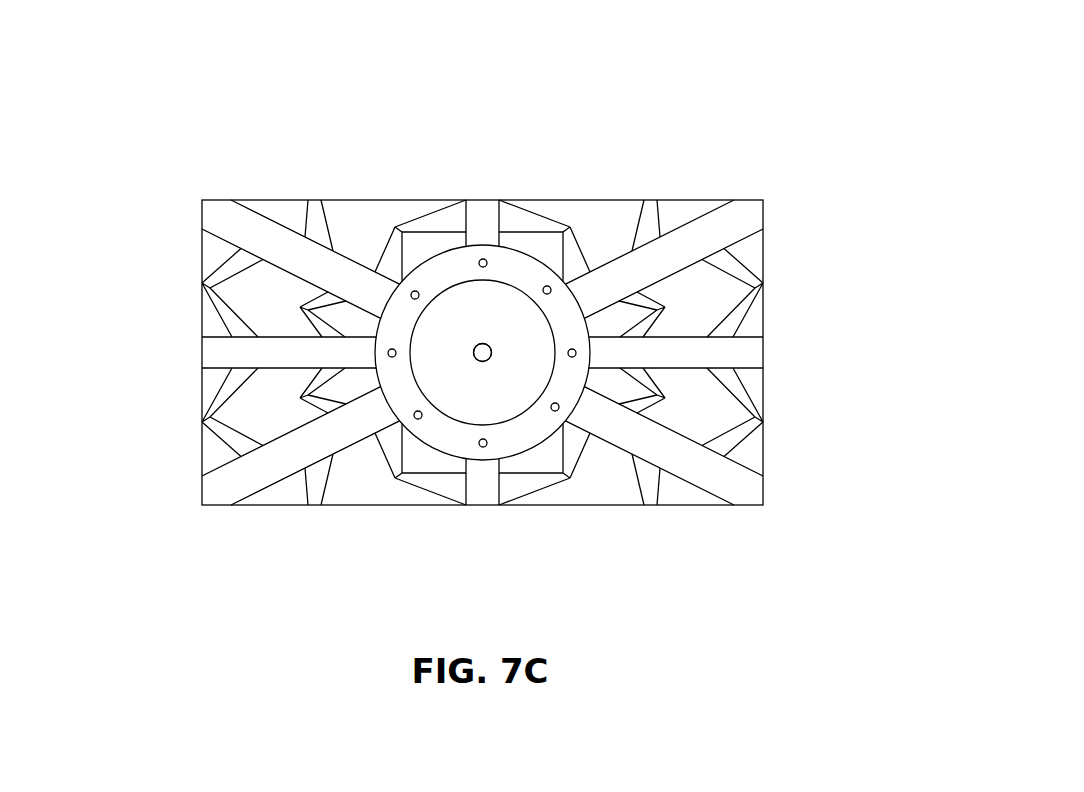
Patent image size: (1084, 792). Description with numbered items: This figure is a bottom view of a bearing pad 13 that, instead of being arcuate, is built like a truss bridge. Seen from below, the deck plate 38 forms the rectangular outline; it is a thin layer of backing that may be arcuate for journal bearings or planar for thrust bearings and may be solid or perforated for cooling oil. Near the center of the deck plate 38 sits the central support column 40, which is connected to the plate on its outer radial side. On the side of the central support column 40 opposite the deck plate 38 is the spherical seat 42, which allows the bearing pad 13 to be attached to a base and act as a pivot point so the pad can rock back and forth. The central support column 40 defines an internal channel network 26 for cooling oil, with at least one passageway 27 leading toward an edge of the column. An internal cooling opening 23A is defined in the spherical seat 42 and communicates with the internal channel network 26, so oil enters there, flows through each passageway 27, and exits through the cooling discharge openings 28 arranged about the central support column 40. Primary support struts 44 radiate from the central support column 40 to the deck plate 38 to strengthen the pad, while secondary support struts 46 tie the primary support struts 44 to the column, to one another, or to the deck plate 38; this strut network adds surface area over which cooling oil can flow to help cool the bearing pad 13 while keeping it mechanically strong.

The bearing pad 13 is at (505, 317).
The deck plate 38 is at (364, 218).
The spherical seat 42 is at (506, 308).
The passageway 27 is at (750, 308).
The primary support struts 44 is at (742, 210).
The secondary support struts 46 is at (735, 270).
The internal channel network 26 is at (467, 358).
The internal cooling opening 23A is at (490, 348).
The cooling discharge opening 28 is at (560, 406).
The central support column 40 is at (495, 445).